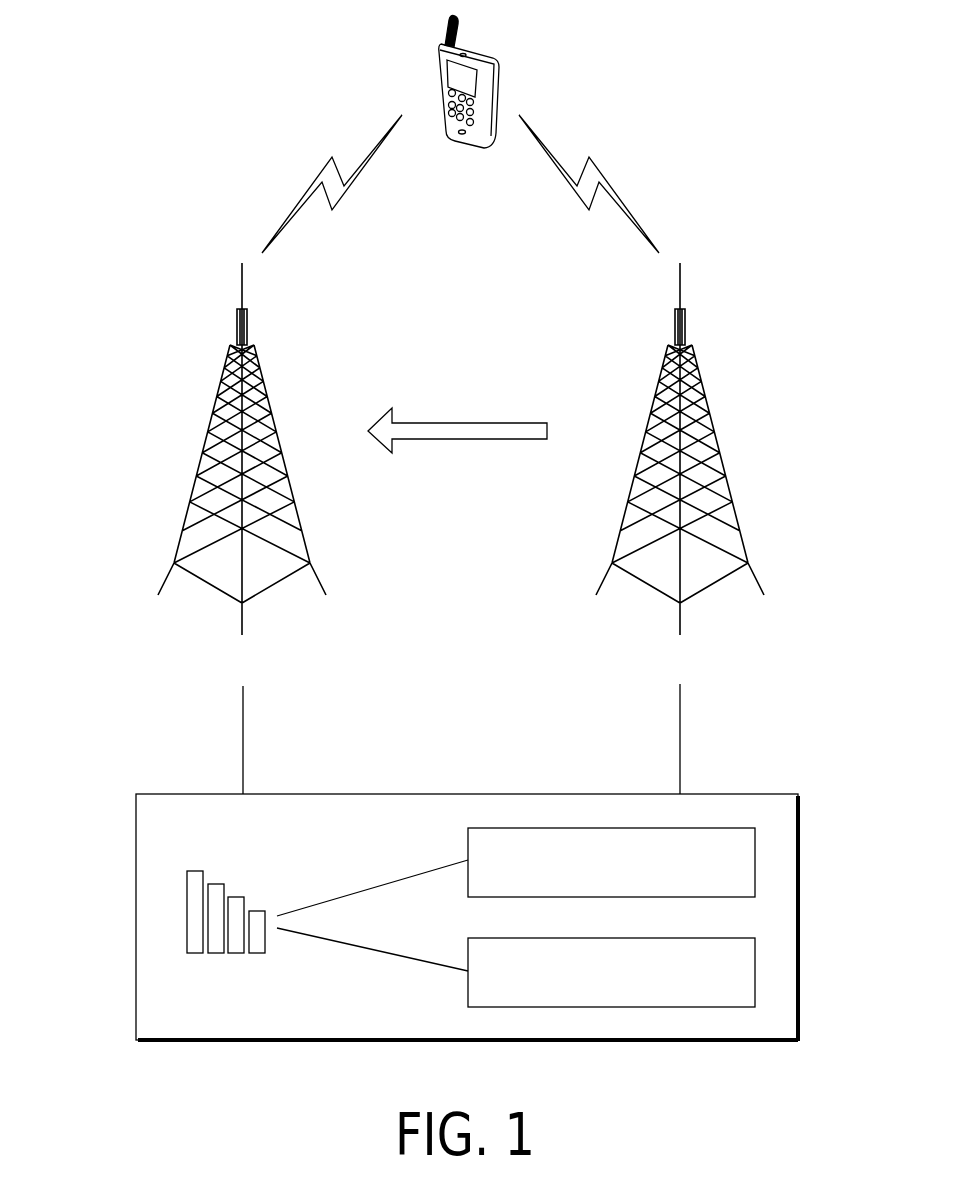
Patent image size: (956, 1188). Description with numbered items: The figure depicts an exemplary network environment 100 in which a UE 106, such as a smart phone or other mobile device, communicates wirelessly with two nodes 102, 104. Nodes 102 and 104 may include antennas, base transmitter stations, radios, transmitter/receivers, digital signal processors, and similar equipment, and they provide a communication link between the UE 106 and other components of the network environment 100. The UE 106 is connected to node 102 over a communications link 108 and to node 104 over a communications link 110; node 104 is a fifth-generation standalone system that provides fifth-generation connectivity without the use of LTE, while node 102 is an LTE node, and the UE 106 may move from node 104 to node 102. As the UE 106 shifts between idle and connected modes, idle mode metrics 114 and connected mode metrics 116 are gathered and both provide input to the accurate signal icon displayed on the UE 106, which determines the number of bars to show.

The network environment 100 is at (86, 91).
The node 102 is at (216, 410).
The node 104 is at (704, 409).
The UE 106 is at (500, 76).
The communications link 108 is at (315, 182).
The communications link 110 is at (606, 182).
The idle mode metrics 114 is at (755, 862).
The connected mode metrics 116 is at (755, 970).